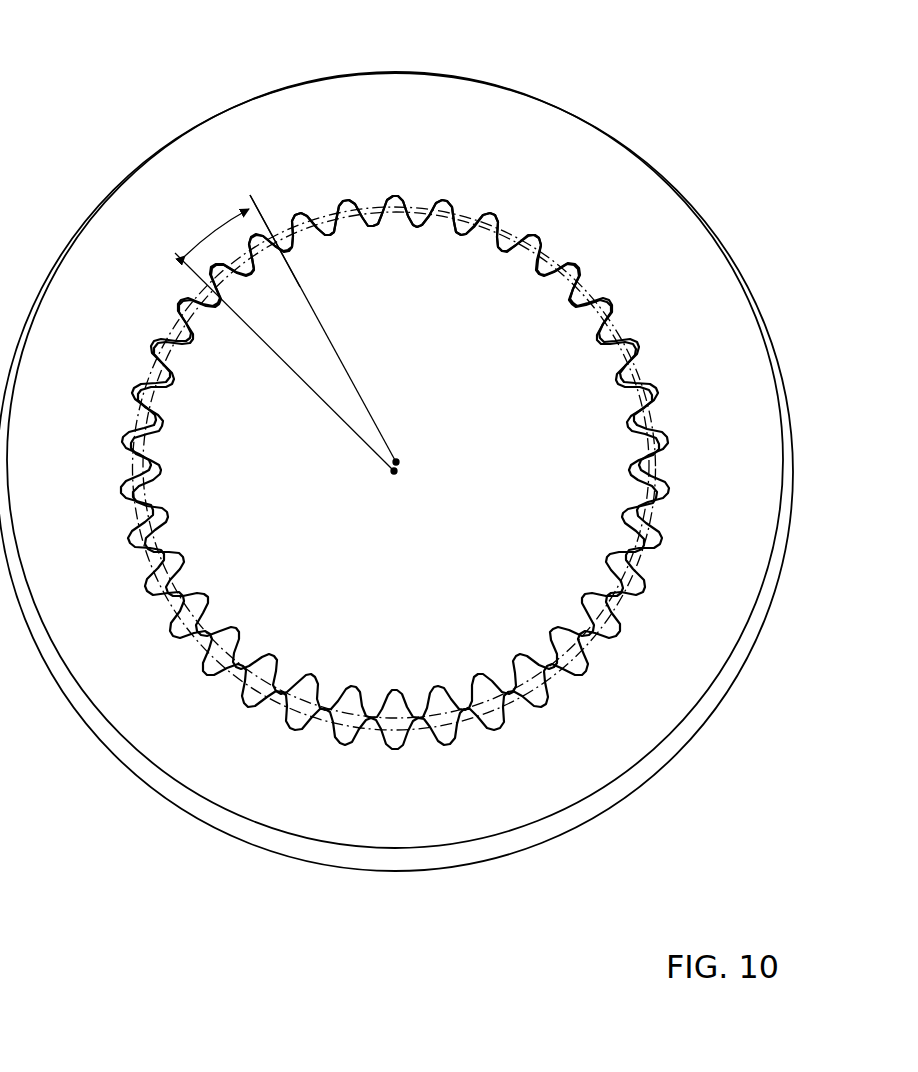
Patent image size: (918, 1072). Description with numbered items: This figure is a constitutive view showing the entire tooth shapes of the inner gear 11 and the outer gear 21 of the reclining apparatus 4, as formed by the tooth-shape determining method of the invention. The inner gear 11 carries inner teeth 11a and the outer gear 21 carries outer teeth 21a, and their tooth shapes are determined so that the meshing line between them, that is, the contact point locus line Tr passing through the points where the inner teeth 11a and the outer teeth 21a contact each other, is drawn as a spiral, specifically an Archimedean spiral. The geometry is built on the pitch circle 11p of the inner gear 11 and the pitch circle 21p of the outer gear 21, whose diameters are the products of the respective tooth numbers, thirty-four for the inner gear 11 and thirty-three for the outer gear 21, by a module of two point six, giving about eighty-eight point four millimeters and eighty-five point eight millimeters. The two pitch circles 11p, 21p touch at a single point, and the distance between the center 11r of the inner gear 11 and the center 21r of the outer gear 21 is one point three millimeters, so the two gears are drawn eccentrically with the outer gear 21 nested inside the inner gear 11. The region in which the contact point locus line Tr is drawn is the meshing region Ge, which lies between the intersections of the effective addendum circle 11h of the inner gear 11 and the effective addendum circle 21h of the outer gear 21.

The reclining apparatus 4 is at (694, 70).
The inner gear 11 is at (566, 160).
The inner teeth 11a is at (660, 470).
The effective addendum circle of the inner gear 11h is at (613, 632).
The pitch circle of the inner gear 11p is at (394, 871).
The center of the inner gear 11r is at (396, 472).
The outer gear 21 is at (588, 396).
The outer teeth 21a is at (647, 450).
The effective addendum circle of the outer gear 21h is at (556, 640).
The pitch circle of the outer gear 21p is at (393, 848).
The center of the outer gear 21r is at (398, 462).
The meshing region Ge is at (217, 225).
The contact point locus line Tr is at (250, 277).